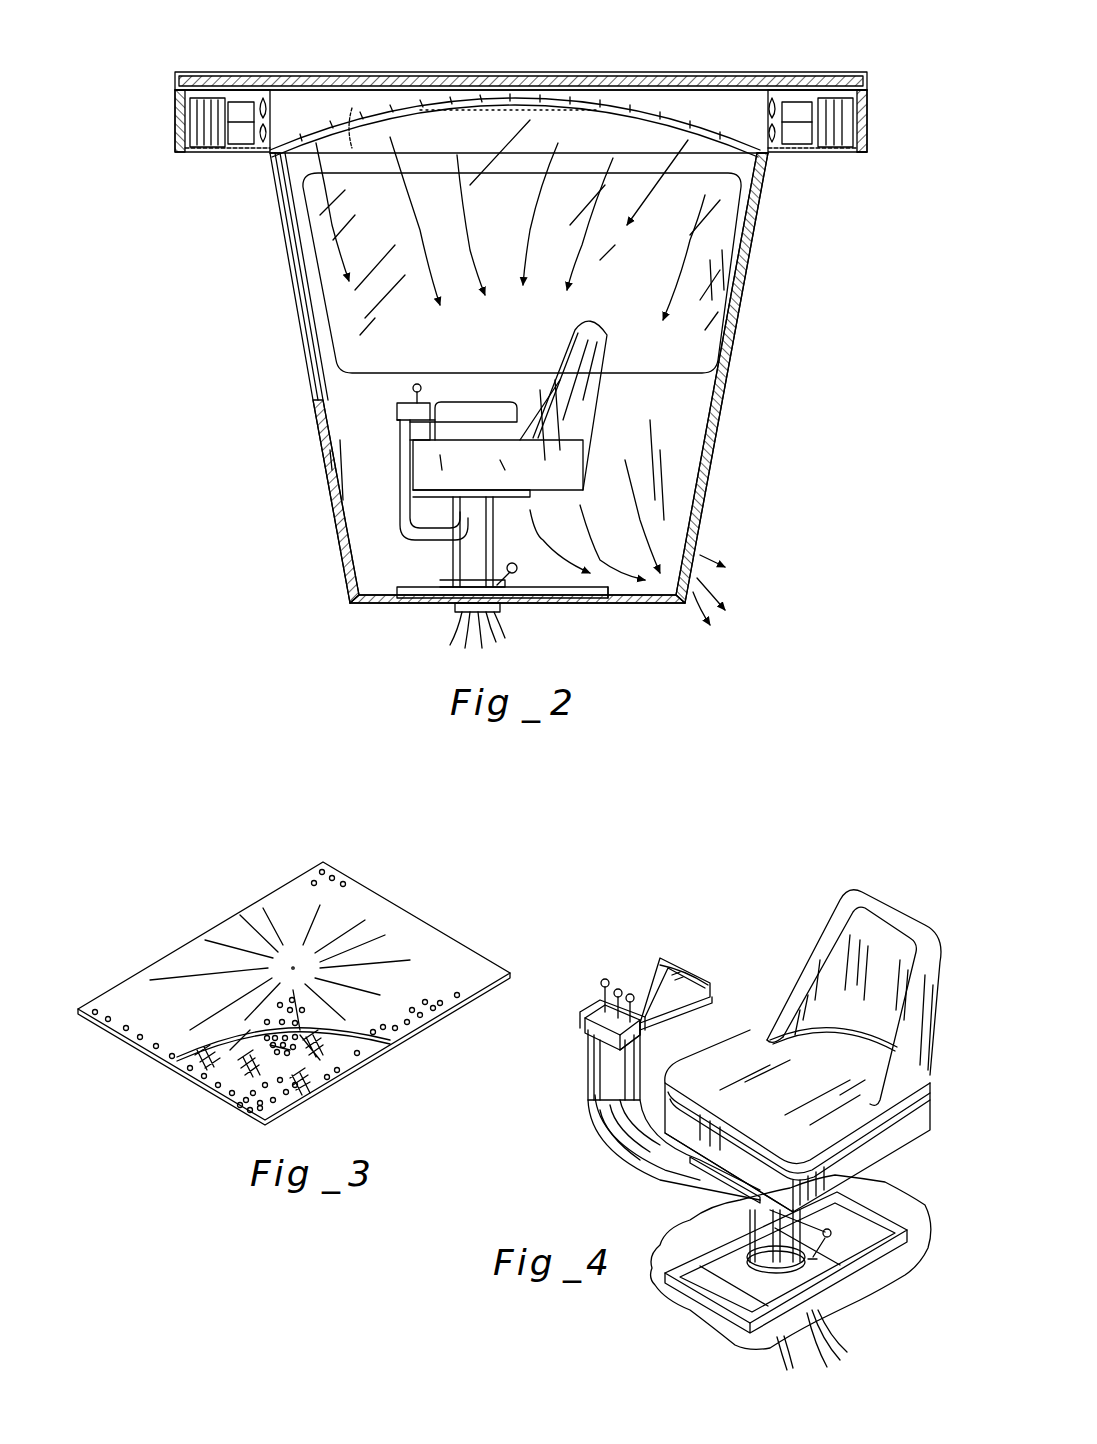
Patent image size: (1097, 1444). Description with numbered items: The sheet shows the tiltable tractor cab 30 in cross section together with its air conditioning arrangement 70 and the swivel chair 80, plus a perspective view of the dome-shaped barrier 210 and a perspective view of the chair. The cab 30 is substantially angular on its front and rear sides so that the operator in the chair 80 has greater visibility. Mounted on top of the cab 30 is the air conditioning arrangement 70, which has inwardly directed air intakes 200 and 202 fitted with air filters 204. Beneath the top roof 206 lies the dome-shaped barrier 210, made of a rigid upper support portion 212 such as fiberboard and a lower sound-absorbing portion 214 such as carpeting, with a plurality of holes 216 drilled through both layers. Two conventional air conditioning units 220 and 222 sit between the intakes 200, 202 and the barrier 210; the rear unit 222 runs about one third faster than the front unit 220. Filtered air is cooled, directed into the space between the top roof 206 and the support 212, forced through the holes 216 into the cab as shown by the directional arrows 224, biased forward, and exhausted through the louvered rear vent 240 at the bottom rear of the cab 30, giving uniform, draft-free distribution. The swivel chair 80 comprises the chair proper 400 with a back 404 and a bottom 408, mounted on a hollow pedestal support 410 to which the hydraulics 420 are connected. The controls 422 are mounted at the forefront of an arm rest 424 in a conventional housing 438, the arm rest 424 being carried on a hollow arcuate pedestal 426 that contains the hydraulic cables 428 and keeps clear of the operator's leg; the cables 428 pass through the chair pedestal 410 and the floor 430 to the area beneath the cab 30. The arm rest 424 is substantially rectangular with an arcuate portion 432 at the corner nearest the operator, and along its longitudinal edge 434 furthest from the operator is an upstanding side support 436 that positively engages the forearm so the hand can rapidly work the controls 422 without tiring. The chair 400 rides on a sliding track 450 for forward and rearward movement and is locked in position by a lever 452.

In FIG. 2, the cab 30 is at (290, 290).
In FIG. 2, the air conditioning arrangement 70 is at (436, 72).
In FIG. 2, the swivel chair 80 is at (568, 352).
In FIG. 2, the air intake 200 is at (175, 125).
In FIG. 2, the air intake 202 is at (860, 148).
In FIG. 2, the air filter 204 is at (180, 120).
In FIG. 2, the top roof 206 is at (521, 72).
In FIG. 2, the dome-shaped barrier 210 is at (368, 134).
In FIG. 3, the dome-shaped barrier 210 is at (462, 943).
In FIG. 2, the upper support portion 212 is at (352, 106).
In FIG. 3, the upper support portion 212 is at (347, 1037).
In FIG. 2, the lower sound-absorbing portion 214 is at (495, 112).
In FIG. 3, the lower sound-absorbing portion 214 is at (305, 1100).
In FIG. 3, the holes 216 is at (313, 879).
In FIG. 2, the front air conditioning unit 220 is at (264, 112).
In FIG. 2, the rear air conditioning unit 222 is at (820, 105).
In FIG. 2, the directional arrows 224 is at (674, 275).
In FIG. 2, the rear vent 240 is at (698, 548).
In FIG. 2, the chair proper 400 is at (498, 438).
In FIG. 4, the chair proper 400 is at (855, 938).
In FIG. 4, the back 404 is at (928, 932).
In FIG. 4, the bottom 408 is at (845, 1130).
In FIG. 2, the pedestal support 410 is at (468, 557).
In FIG. 4, the pedestal support 410 is at (782, 1253).
In FIG. 4, the hydraulics 420 is at (577, 1112).
In FIG. 2, the controls 422 is at (418, 378).
In FIG. 4, the controls 422 is at (615, 1003).
In FIG. 2, the arm rest 424 is at (400, 436).
In FIG. 4, the arm rest 424 is at (690, 968).
In FIG. 2, the pedestal 426 is at (432, 440).
In FIG. 4, the pedestal 426 is at (588, 1083).
In FIG. 2, the hydraulic cables 428 is at (450, 630).
In FIG. 4, the hydraulic cables 428 is at (842, 1361).
In FIG. 2, the floor 430 is at (660, 602).
In FIG. 4, the floor 430 is at (692, 1253).
In FIG. 4, the arcuate portion 432 is at (699, 985).
In FIG. 4, the longitudinal edge 434 is at (700, 995).
In FIG. 2, the upstanding side support 436 is at (397, 411).
In FIG. 4, the upstanding side support 436 is at (585, 1010).
In FIG. 4, the housing 438 is at (640, 1030).
In FIG. 2, the sliding track 450 is at (592, 600).
In FIG. 4, the sliding track 450 is at (872, 1242).
In FIG. 2, the lever 452 is at (526, 577).
In FIG. 4, the lever 452 is at (850, 1240).